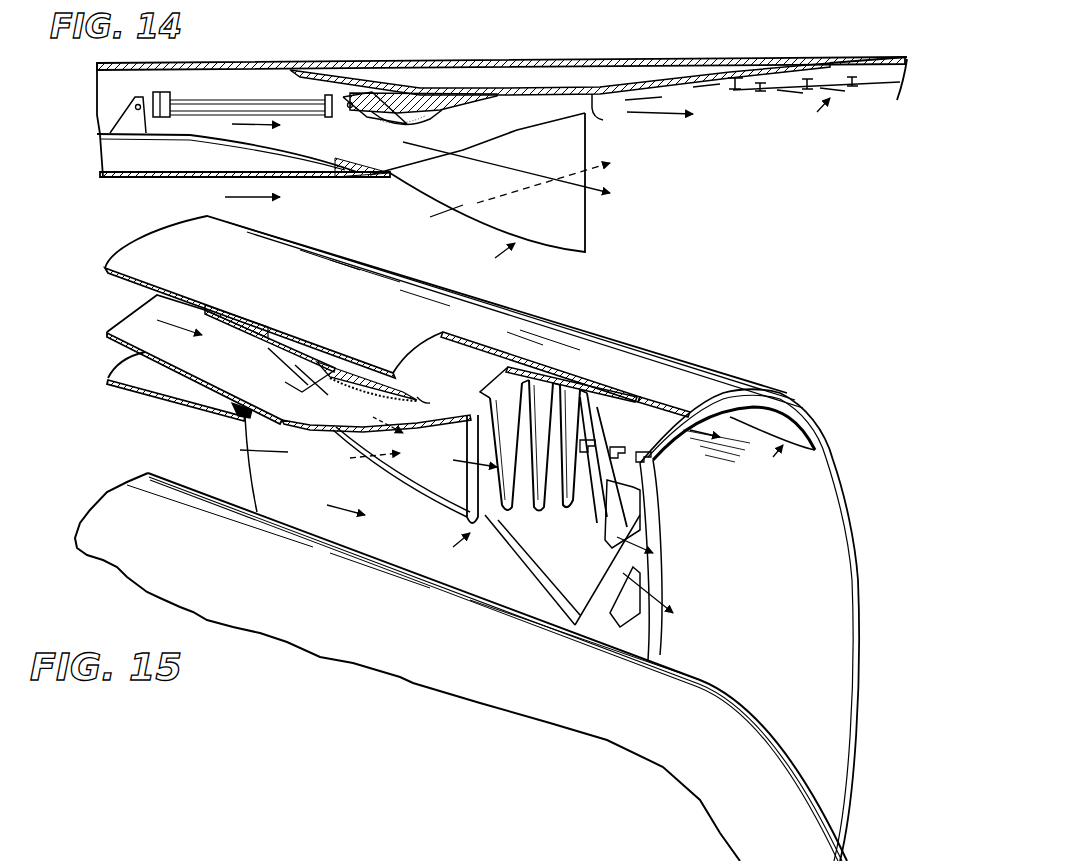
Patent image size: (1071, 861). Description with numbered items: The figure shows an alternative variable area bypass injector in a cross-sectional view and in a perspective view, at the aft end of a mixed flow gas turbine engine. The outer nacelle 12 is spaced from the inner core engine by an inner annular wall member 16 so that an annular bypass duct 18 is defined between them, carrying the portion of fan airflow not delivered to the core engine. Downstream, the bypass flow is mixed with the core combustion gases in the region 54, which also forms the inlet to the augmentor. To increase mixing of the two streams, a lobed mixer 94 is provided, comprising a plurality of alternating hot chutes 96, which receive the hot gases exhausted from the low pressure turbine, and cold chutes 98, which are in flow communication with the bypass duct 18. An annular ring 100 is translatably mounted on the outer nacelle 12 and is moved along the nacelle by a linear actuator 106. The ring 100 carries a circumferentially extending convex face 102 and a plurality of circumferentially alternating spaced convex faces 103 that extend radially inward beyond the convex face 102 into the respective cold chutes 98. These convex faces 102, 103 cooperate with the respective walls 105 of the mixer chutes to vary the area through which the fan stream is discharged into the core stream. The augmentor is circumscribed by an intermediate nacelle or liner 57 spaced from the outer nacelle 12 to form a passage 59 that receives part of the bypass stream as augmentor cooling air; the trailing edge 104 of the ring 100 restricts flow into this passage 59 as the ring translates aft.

In FIG. 14, the outer nacelle 12 is at (348, 62).
In FIG. 15, the outer nacelle 12 is at (647, 364).
In FIG. 14, the inner annular wall member 16 is at (97, 128).
In FIG. 15, the inner annular wall member 16 is at (121, 318).
In FIG. 14, the annular bypass duct 18 is at (266, 93).
In FIG. 15, the annular bypass duct 18 is at (185, 353).
In FIG. 14, the mixing region 54 is at (326, 207).
In FIG. 15, the mixing region 54 is at (188, 462).
In FIG. 14, the intermediate nacelle or liner 57 is at (796, 107).
In FIG. 15, the intermediate nacelle or liner 57 is at (691, 457).
In FIG. 14, the passage 59 is at (823, 72).
In FIG. 15, the passage 59 is at (803, 423).
In FIG. 14, the lobed mixer 94 is at (492, 259).
In FIG. 15, the lobed mixer 94 is at (455, 552).
In FIG. 14, the hot chutes 96 is at (565, 210).
In FIG. 15, the hot chutes 96 is at (607, 538).
In FIG. 14, the cold chutes 98 is at (570, 235).
In FIG. 15, the cold chutes 98 is at (607, 505).
In FIG. 14, the annular ring 100 is at (433, 95).
In FIG. 15, the annular ring 100 is at (307, 377).
In FIG. 14, the convex face 102 is at (405, 126).
In FIG. 15, the convex face 102 is at (302, 392).
In FIG. 14, the convex faces 103 is at (383, 114).
In FIG. 15, the convex faces 103 is at (285, 382).
In FIG. 14, the trailing edge 104 is at (603, 121).
In FIG. 15, the trailing edge 104 is at (418, 400).
In FIG. 14, the walls 105 is at (572, 115).
In FIG. 15, the walls 105 is at (465, 420).
In FIG. 14, the linear actuator 106 is at (217, 102).